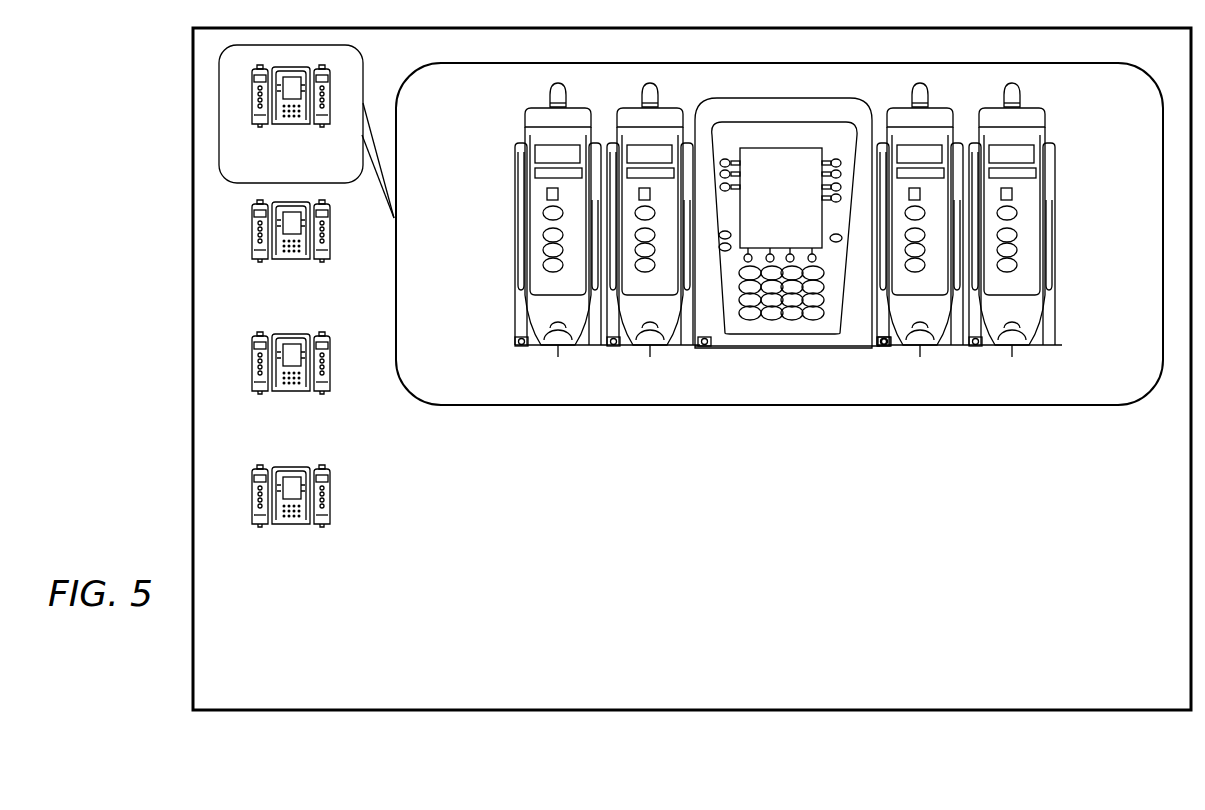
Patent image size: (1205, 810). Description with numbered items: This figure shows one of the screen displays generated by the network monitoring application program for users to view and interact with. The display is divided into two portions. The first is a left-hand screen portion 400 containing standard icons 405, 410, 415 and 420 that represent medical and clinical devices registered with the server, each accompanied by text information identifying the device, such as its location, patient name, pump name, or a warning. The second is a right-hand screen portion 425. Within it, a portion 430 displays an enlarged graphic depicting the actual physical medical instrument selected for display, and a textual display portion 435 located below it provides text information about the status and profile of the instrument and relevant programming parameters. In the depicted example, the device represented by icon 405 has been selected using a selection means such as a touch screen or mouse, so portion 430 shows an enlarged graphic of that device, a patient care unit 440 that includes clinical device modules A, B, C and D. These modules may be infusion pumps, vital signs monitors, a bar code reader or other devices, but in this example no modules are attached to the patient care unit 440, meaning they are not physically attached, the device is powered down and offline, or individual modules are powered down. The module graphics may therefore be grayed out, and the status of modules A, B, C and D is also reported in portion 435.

The left-hand screen portion 400 is at (378, 722).
The standard icon 405 is at (250, 100).
The standard icon 410 is at (380, 157).
The standard icon 415 is at (333, 350).
The standard icon 420 is at (333, 503).
The right-hand screen portion 425 is at (1163, 718).
The portion 430 is at (828, 209).
The textual display portion 435 is at (1042, 443).
The patient care unit 440 is at (780, 96).